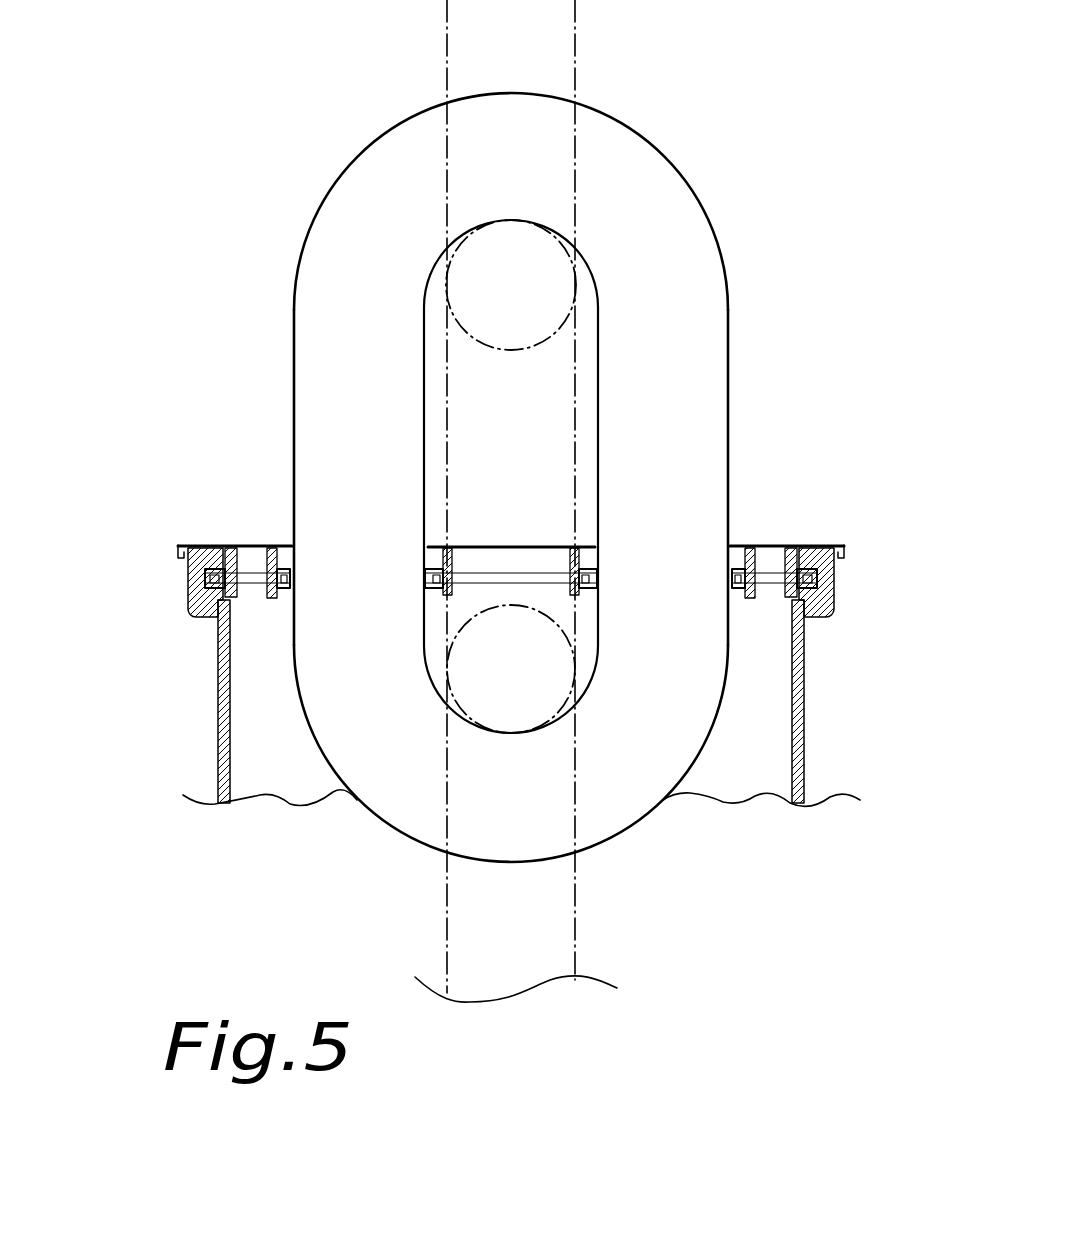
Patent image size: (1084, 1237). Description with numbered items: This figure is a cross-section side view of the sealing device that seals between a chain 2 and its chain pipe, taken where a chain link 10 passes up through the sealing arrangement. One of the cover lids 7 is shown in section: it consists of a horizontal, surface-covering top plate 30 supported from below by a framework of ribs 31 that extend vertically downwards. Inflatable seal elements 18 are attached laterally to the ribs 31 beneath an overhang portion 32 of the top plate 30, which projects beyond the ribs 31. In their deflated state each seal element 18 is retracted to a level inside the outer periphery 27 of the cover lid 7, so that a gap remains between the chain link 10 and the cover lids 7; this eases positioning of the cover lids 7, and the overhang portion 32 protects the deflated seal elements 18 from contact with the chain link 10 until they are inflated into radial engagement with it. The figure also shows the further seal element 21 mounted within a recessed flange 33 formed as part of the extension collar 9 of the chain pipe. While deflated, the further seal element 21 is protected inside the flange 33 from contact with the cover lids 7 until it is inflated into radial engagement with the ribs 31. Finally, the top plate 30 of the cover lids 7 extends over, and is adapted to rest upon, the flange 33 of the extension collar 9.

The chain 2 is at (648, 85).
The chain link 10 is at (692, 293).
The outer periphery 27 is at (297, 545).
The cover lid 7 is at (208, 540).
The overhang portion 32 is at (268, 543).
The inflatable seal element 18 is at (424, 565).
The top plate 30 is at (483, 545).
The further seal element 21 is at (188, 573).
The ribs 31 is at (444, 597).
The recessed flange 33 is at (822, 602).
The extension collar 9 is at (200, 703).